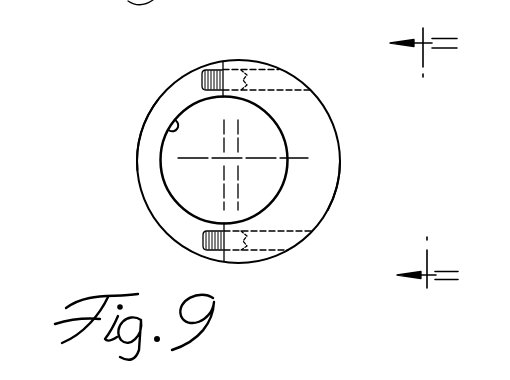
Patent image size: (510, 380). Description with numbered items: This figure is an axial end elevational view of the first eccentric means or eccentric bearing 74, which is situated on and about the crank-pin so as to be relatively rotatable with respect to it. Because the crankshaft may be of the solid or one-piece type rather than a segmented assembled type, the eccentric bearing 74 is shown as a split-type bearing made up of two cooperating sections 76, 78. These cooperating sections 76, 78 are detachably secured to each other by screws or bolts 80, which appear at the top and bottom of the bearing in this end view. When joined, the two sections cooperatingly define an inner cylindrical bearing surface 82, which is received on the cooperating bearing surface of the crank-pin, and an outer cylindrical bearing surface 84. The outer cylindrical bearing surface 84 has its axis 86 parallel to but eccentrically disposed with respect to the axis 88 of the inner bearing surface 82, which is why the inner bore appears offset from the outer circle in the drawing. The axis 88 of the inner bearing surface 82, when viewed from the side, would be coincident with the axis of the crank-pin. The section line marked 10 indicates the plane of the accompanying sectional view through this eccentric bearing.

The section line 10- 10 is at (412, 164).
The eccentric bearing 74 is at (344, 143).
The cooperating section 76 is at (177, 228).
The cooperating section 78 is at (326, 210).
The screws or bolts 80 is at (248, 67).
The inner cylindrical bearing surface 82 is at (169, 130).
The outer cylindrical bearing surface 84 is at (137, 168).
The axis of outer bearing surface 86 is at (238, 158).
The axis of inner bearing surface 88 is at (224, 158).